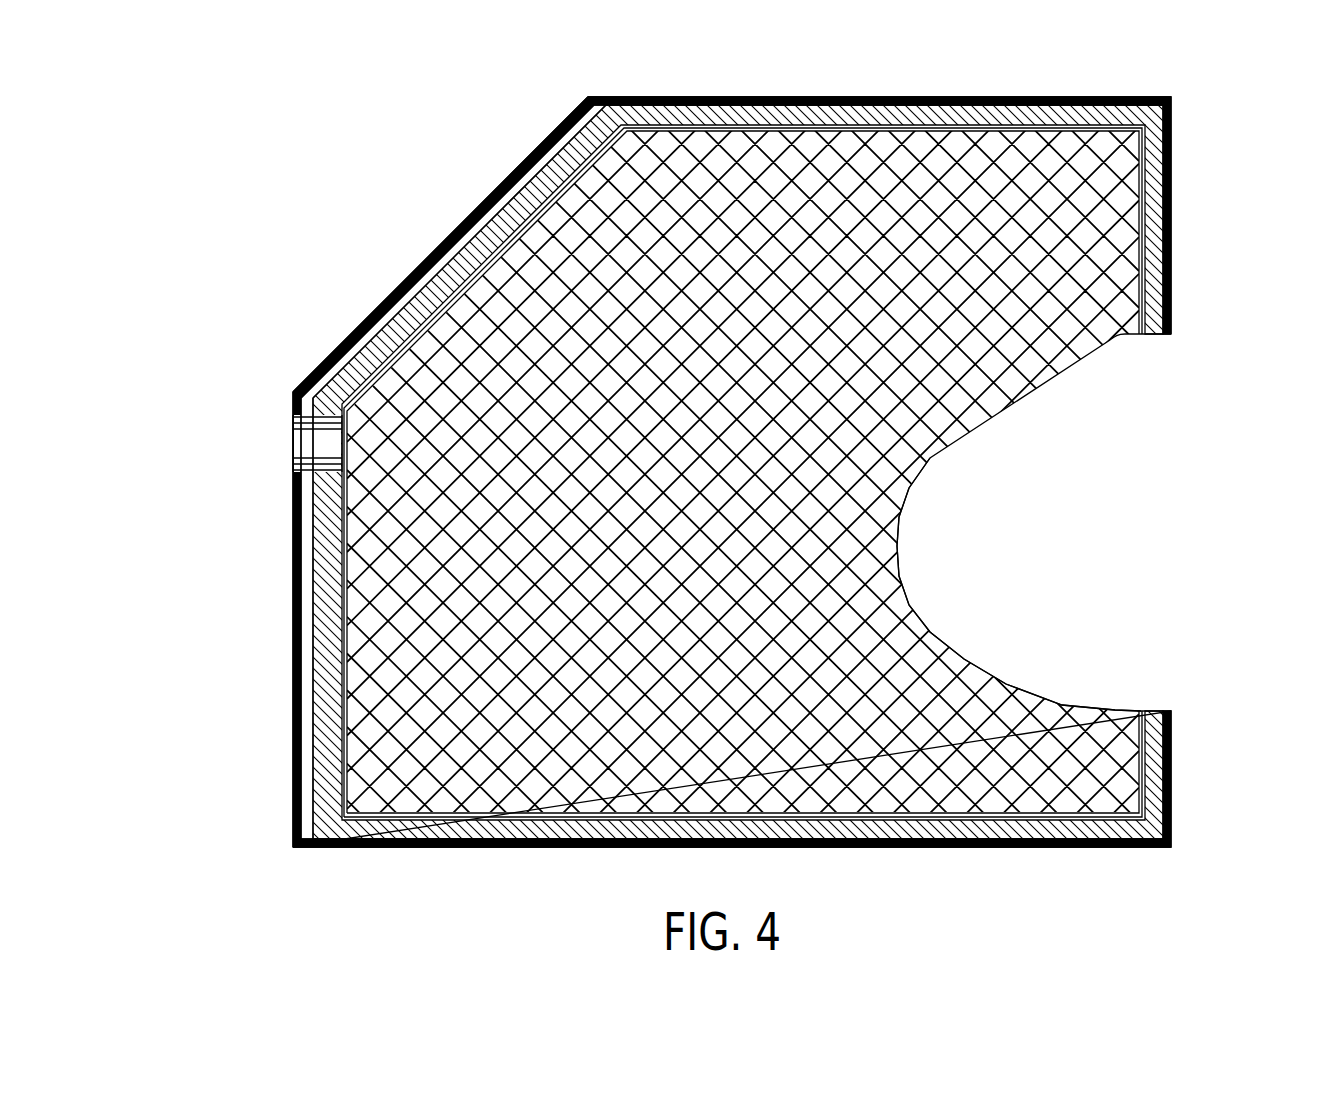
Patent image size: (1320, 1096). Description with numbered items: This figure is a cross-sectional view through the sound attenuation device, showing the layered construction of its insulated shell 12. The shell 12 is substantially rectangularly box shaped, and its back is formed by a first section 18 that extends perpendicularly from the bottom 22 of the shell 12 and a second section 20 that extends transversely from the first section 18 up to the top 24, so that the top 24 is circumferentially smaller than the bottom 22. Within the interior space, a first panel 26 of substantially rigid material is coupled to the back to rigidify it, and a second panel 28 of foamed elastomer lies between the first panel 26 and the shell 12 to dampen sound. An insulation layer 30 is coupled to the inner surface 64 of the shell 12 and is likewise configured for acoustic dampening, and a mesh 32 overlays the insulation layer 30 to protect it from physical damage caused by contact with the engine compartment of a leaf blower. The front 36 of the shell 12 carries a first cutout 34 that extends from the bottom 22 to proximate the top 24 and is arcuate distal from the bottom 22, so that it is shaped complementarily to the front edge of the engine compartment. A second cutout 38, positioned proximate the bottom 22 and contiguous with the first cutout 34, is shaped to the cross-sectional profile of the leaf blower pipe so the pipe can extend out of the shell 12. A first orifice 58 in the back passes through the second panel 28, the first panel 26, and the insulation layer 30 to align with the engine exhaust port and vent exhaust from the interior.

The shell 12 is at (364, 848).
The first section 18 is at (294, 492).
The second section 20 is at (435, 253).
The bottom 22 is at (580, 847).
The top 24 is at (992, 98).
The first panel 26 is at (294, 724).
The second panel 28 is at (304, 686).
The insulation layer 30 is at (850, 110).
The mesh 32 is at (335, 552).
The first cutout 34 is at (1165, 463).
The front 36 is at (955, 147).
The second cutout 38 is at (1010, 535).
The first orifice 58 is at (333, 441).
The inner surface 64 is at (759, 417).